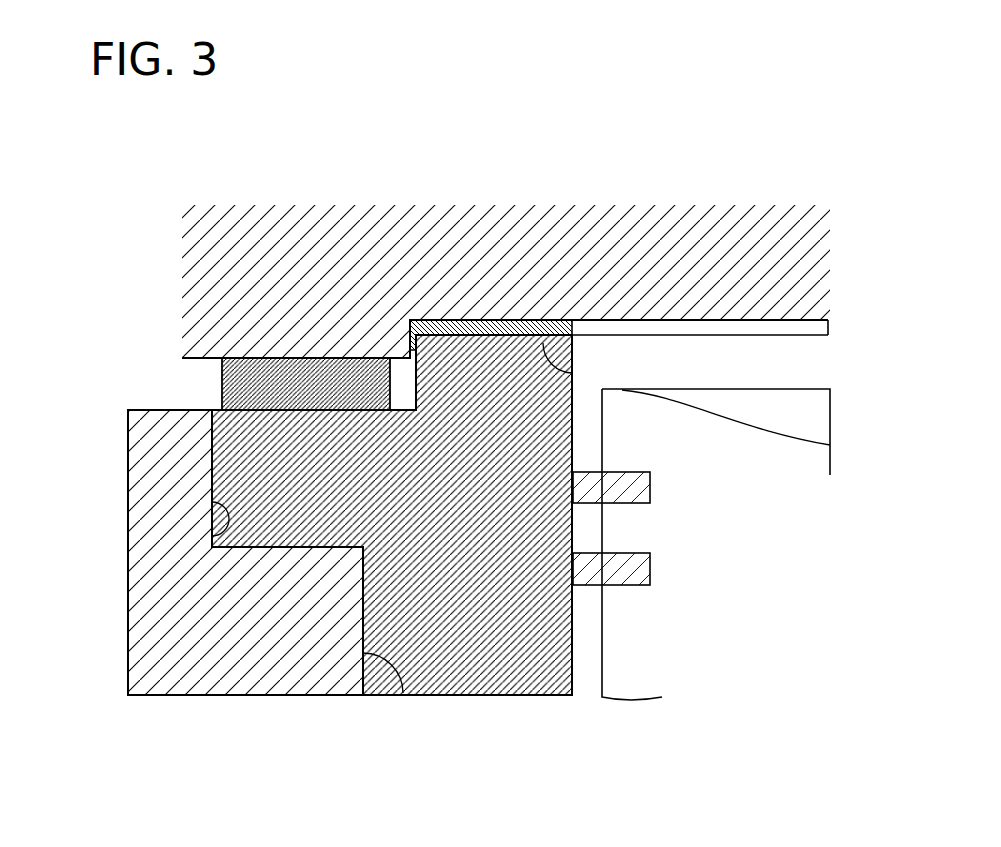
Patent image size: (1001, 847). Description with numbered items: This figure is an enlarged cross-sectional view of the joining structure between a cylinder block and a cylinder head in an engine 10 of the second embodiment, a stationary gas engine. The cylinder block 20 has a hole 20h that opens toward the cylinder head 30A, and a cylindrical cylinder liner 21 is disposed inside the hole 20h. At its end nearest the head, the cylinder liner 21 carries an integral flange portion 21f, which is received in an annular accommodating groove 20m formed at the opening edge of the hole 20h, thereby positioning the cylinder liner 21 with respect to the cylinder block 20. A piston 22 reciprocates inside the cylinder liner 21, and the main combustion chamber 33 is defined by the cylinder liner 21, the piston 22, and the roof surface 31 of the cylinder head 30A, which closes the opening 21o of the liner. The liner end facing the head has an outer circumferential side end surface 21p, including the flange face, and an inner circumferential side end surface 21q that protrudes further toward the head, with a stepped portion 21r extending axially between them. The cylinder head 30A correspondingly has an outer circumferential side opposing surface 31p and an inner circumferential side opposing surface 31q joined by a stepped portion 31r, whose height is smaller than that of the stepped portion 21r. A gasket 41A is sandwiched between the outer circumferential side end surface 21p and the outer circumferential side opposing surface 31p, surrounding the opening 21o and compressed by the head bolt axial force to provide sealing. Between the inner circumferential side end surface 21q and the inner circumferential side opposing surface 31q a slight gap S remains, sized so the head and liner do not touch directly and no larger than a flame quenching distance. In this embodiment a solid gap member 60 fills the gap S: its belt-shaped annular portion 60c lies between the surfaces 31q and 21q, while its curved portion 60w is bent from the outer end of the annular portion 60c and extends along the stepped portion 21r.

The engine 10 is at (792, 118).
The cylinder block 20 is at (150, 450).
The hole 20h is at (403, 695).
The accommodating groove 20m is at (220, 533).
The cylinder liner 21 is at (363, 667).
The flange portion 21f is at (212, 480).
The opening 21o is at (573, 345).
The outer circumferential side end surface 21p is at (260, 408).
The inner circumferential side end surface 21q is at (475, 335).
The stepped portion 21r is at (356, 385).
The piston 22 is at (602, 657).
The cylinder head 30A is at (825, 343).
The roof surface 31 is at (783, 322).
The outer circumferential side opposing surface 31p is at (256, 372).
The inner circumferential side opposing surface 31q is at (573, 375).
The stepped portion 31r is at (440, 322).
The main combustion chamber 33 is at (768, 373).
The gasket 41A is at (330, 358).
The gap member 60 is at (533, 320).
The annular portion 60c is at (513, 320).
The curved portion 60w is at (416, 383).
The gap S is at (572, 322).